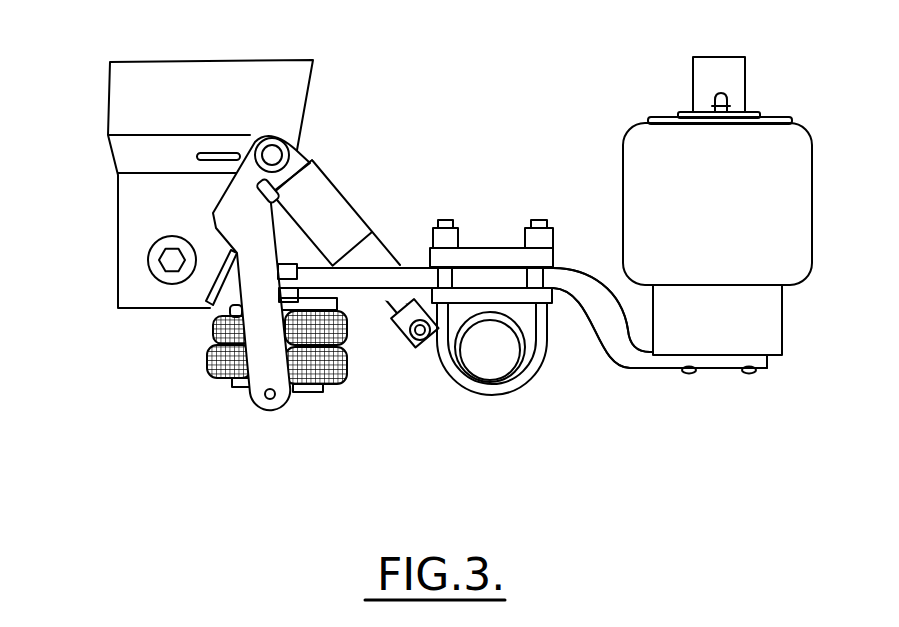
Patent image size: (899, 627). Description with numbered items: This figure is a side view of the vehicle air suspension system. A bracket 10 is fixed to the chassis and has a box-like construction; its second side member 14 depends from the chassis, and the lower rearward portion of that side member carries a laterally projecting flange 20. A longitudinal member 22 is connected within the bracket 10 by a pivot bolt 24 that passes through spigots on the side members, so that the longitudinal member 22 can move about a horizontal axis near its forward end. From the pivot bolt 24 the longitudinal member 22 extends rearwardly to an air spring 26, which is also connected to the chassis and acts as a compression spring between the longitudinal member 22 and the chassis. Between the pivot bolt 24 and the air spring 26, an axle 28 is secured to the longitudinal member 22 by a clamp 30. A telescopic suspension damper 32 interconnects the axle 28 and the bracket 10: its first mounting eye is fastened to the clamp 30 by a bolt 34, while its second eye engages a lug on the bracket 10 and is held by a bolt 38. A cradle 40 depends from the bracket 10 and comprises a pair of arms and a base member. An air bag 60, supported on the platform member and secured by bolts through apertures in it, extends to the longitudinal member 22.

The bracket 10 is at (118, 44).
The second side member 14 is at (213, 112).
The flange 20 is at (213, 290).
The longitudinal member 22 is at (597, 337).
The pivot bolt 24 is at (160, 262).
The air spring 26 is at (813, 162).
The axle 28 is at (490, 353).
The clamp 30 is at (495, 247).
The telescopic suspension damper 32 is at (350, 205).
The bolt 34 is at (418, 342).
The bolt 38 is at (275, 155).
The cradle 40 is at (288, 226).
The air bag 60 is at (210, 358).